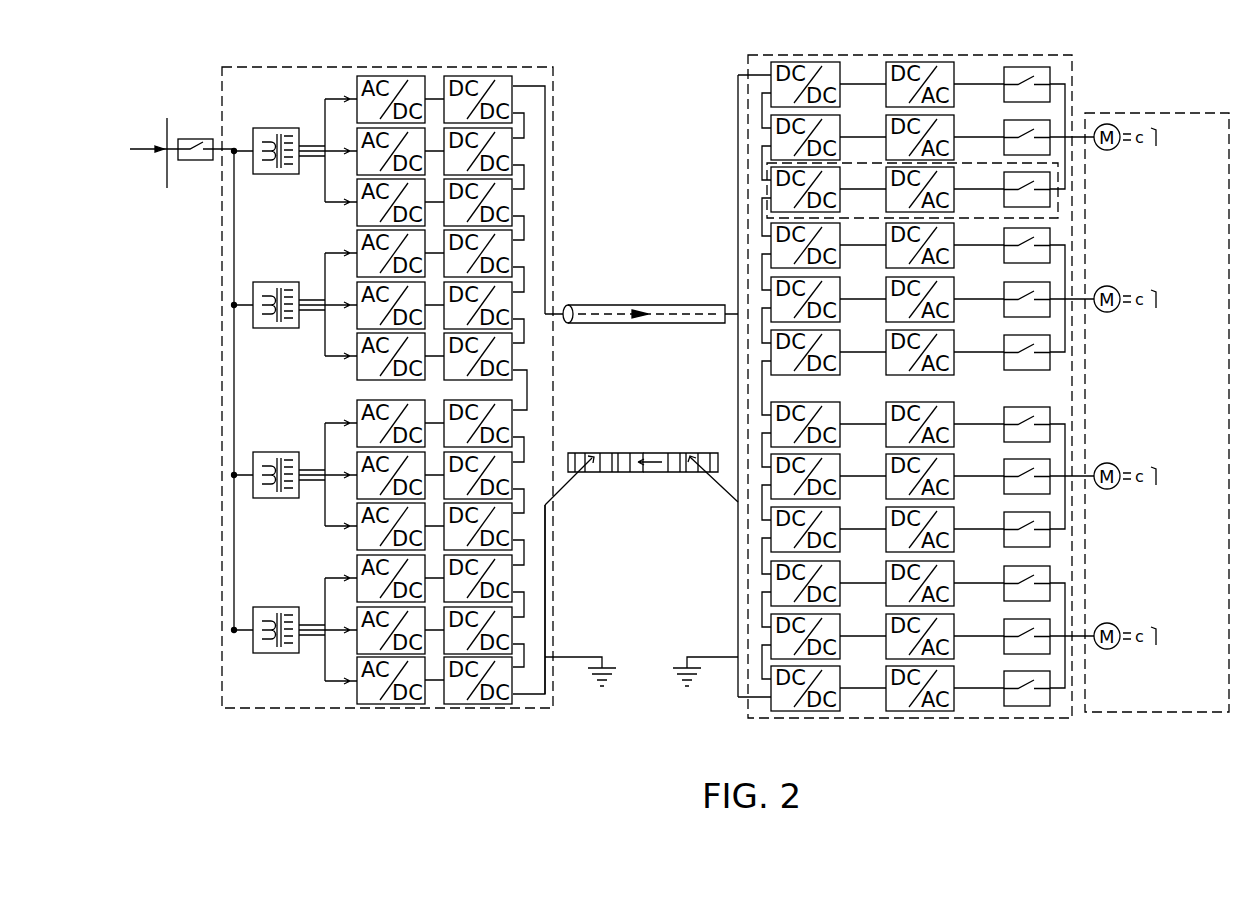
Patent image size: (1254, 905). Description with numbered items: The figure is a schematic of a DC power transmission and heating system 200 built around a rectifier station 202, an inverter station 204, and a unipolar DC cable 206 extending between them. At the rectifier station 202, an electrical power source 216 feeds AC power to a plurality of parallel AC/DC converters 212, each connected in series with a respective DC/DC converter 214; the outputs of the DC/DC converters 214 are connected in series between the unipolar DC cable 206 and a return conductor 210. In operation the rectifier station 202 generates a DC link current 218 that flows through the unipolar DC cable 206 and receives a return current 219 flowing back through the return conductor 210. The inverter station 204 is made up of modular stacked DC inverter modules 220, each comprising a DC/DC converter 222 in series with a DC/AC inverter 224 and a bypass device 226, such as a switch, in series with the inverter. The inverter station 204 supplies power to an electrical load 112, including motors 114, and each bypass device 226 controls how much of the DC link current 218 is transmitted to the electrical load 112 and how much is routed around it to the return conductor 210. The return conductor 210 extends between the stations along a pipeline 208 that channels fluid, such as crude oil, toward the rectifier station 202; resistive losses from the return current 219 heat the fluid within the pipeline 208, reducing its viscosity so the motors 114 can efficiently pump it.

The DC power transmission and heating system 200 is at (1098, 70).
The rectifier station 202 is at (553, 100).
The inverter station 204 is at (748, 57).
The unipolar DC cable 206 is at (596, 300).
The pipeline 208 is at (603, 475).
The return conductor 210 is at (680, 475).
The AC/DC converters 212 is at (393, 706).
The DC/DC converters 214 is at (480, 706).
The electrical power source 216 is at (146, 146).
The DC link current 218 is at (646, 325).
The return current 219 is at (645, 475).
The modular stacked DC (MSDC) inverter module 220 is at (1060, 210).
The DC/DC converter 222 is at (818, 716).
The DC/AC inverter 224 is at (930, 716).
The bypass device 226 is at (1028, 710).
The electrical load 112 is at (1184, 113).
The motors 114 is at (1108, 288).